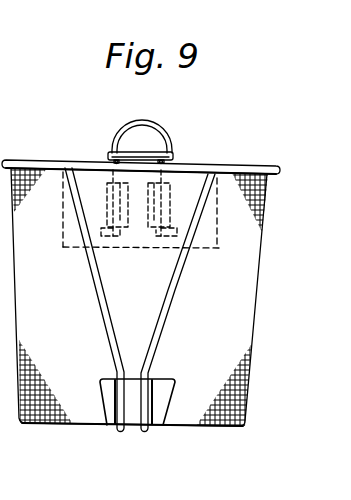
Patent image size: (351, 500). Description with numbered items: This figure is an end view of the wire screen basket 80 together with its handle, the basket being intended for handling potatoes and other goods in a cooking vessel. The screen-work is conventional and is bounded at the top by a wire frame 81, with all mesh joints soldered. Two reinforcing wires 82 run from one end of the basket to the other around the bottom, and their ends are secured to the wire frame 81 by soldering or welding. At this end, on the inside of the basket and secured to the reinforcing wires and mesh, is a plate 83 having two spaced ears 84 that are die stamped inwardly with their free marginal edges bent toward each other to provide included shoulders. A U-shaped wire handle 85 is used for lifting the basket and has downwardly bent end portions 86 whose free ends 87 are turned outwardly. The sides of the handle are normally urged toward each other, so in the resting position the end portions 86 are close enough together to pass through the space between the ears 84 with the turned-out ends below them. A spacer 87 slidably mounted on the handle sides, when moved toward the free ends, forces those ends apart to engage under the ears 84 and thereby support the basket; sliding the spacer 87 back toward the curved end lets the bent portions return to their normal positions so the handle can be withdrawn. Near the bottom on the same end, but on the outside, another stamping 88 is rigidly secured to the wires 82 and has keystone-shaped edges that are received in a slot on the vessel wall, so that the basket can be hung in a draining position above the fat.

The wire screen basket 80 is at (202, 425).
The wire frame 81 is at (247, 165).
The reinforcing wires 82 is at (173, 279).
The plate 83 is at (218, 248).
The ears 84 is at (120, 213).
The U-shaped wire handle 85 is at (152, 123).
The downwardly bent end portions 86 is at (162, 221).
The spacer 87 is at (137, 147).
The stamping 88 is at (98, 379).